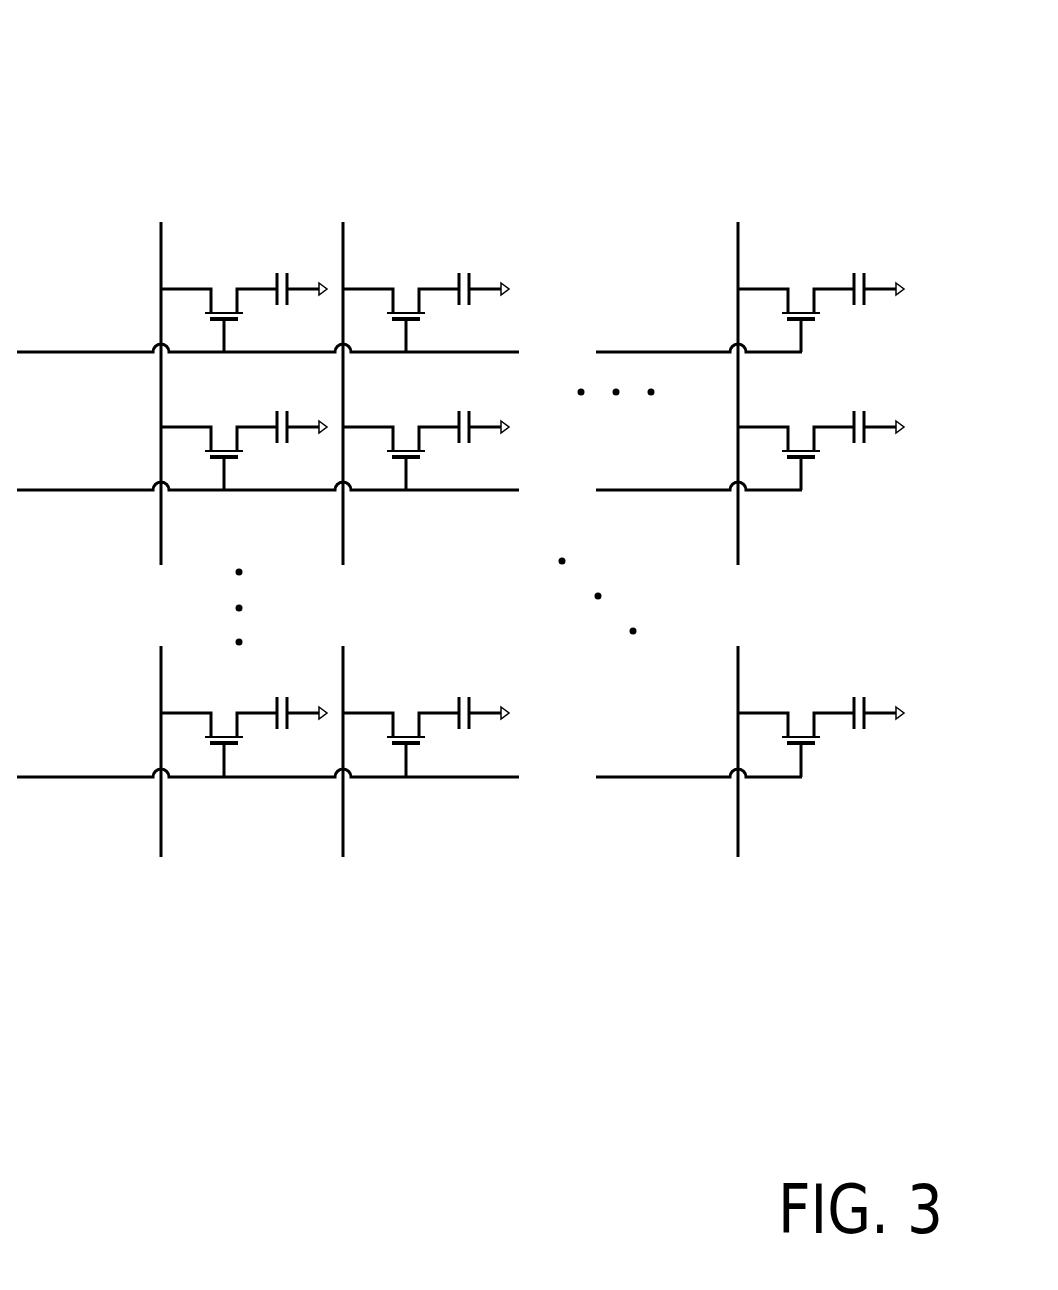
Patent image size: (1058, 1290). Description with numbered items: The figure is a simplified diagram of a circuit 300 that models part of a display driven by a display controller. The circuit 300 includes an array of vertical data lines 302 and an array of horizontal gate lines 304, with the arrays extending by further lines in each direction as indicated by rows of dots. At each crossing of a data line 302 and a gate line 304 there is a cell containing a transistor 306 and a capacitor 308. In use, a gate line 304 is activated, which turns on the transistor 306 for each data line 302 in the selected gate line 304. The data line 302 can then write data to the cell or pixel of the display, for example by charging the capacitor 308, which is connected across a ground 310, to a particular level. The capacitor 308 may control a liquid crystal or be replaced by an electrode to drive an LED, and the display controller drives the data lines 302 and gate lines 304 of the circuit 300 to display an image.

The circuit 300 is at (150, 83).
The data line 302 is at (162, 236).
The gate line 304 is at (46, 351).
The transistor 306 is at (230, 321).
The capacitor 308 is at (287, 283).
The ground 310 is at (325, 297).